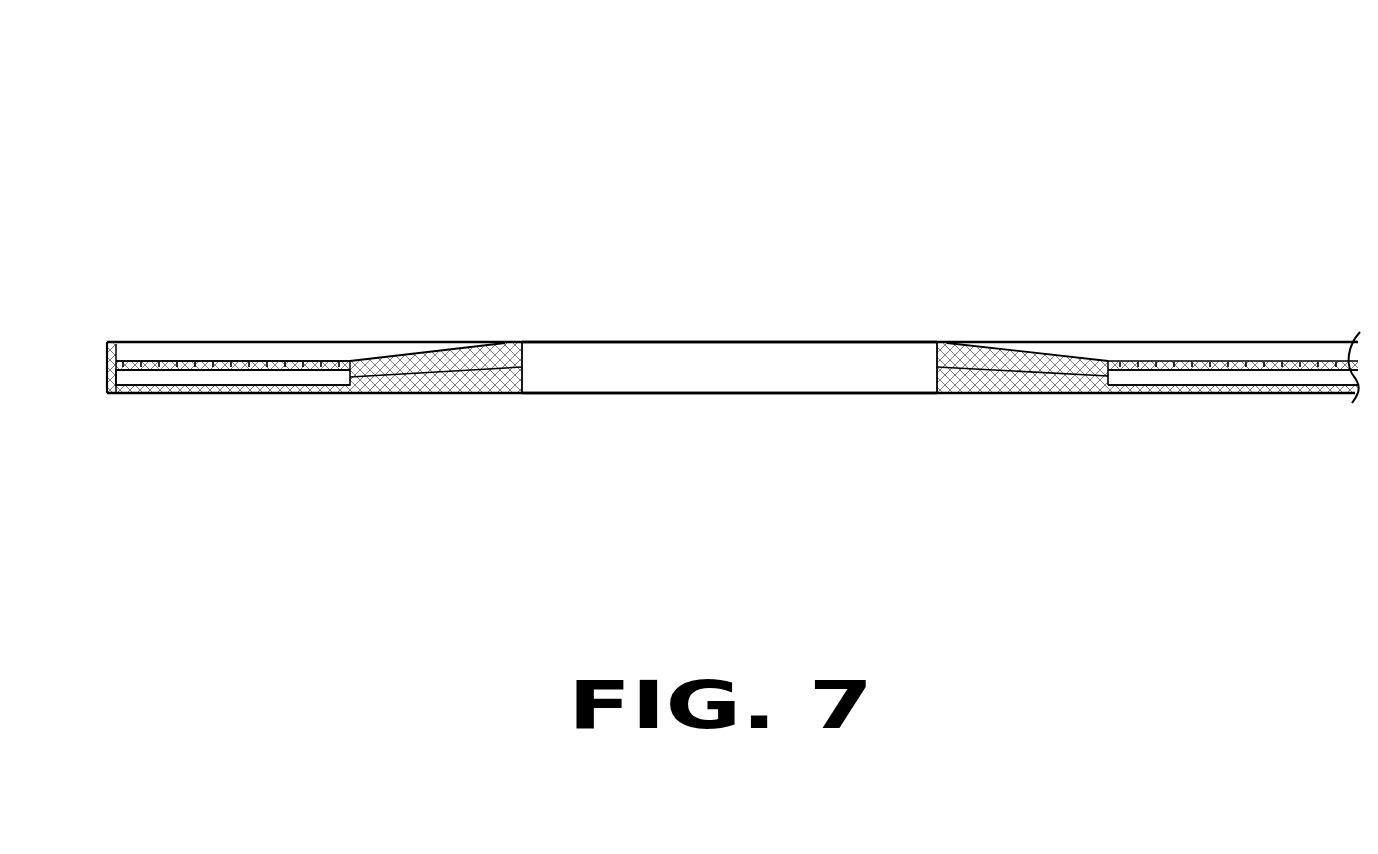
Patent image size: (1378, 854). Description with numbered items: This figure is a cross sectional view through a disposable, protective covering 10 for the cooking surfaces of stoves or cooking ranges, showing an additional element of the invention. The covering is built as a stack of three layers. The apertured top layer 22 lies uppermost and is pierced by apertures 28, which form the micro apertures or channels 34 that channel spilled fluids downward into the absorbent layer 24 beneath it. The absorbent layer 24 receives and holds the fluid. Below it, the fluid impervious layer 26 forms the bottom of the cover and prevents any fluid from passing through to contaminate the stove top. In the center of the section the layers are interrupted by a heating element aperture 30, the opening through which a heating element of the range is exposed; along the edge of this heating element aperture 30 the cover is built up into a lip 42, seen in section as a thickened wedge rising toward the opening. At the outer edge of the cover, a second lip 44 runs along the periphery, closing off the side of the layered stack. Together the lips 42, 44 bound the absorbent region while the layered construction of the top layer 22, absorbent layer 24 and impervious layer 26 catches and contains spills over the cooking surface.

The label assembly 10 is at (1058, 107).
The apertured layer 22 is at (327, 363).
The absorbent layer 24 is at (238, 380).
The fluid impervious layer 26 is at (157, 390).
The aperture 28 is at (289, 361).
The channel 34 is at (289, 361).
The heating element aperture 30 is at (777, 363).
The lip 42 is at (443, 365).
The lip 44 is at (150, 340).